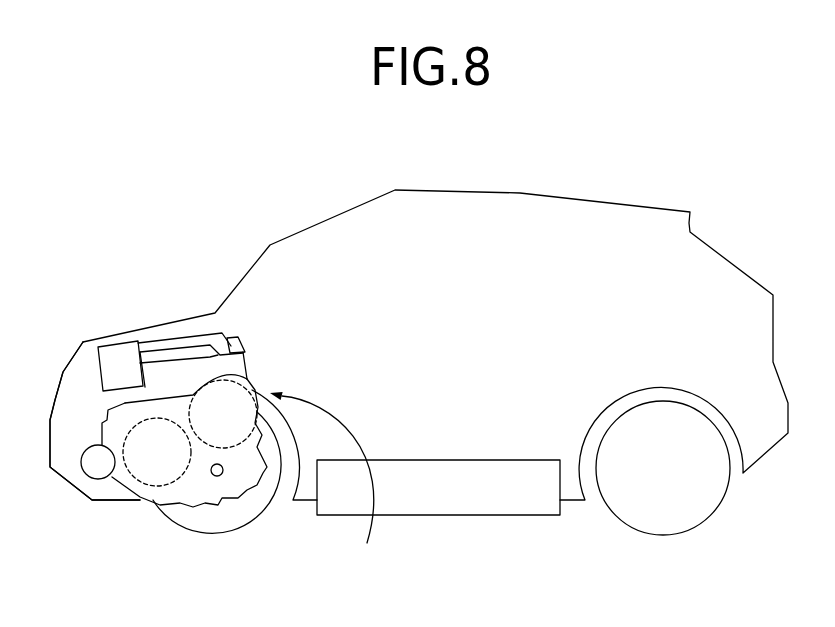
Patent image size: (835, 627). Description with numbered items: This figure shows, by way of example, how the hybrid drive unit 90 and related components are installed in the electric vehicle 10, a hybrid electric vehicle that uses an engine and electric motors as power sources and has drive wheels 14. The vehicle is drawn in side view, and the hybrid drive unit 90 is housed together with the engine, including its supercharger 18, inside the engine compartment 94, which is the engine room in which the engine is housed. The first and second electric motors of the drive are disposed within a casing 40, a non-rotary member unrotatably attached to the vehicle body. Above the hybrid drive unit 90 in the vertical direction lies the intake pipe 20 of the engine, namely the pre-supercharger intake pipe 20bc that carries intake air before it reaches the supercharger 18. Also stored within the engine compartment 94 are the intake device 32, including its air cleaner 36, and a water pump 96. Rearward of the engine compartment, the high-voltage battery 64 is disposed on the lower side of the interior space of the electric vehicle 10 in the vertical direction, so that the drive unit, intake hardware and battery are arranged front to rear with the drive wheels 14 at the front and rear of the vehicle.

The electric vehicle 10 is at (440, 167).
The drive wheels 14 is at (193, 523).
The supercharger 18 is at (245, 358).
The intake pipe 20 is at (145, 306).
The pre-supercharger intake pipe 20bc is at (178, 340).
The intake device 32 is at (86, 345).
The air cleaner 36 is at (112, 365).
The casing 40 is at (218, 498).
The high-voltage battery 64 is at (440, 500).
The hybrid drive unit 90 is at (325, 480).
The engine compartment 94 is at (86, 433).
The water pump 96 is at (97, 467).